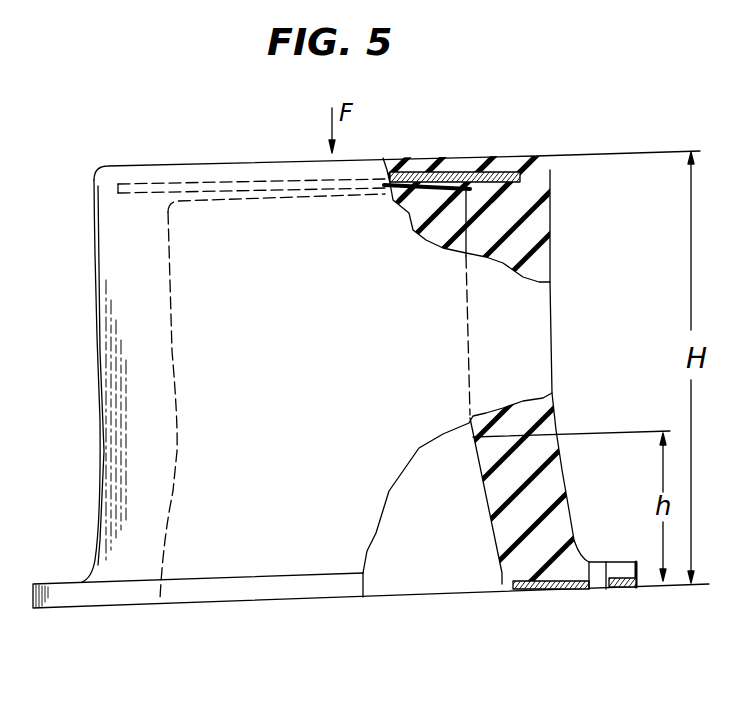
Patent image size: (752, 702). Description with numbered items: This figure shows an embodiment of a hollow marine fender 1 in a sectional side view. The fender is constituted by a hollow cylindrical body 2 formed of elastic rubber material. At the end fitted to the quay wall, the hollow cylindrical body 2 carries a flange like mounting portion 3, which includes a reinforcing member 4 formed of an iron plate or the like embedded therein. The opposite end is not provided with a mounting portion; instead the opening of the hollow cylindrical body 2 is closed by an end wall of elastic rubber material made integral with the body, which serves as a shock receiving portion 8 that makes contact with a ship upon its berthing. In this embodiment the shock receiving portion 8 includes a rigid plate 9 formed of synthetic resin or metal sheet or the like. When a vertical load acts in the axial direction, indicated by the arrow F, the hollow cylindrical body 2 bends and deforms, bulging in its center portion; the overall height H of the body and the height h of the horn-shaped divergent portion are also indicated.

The hollow marine fender 1 is at (94, 341).
The hollow cylindrical body 2 is at (543, 258).
The flange like mounting portion 3 is at (65, 599).
The reinforcing member 4 is at (548, 591).
The shock receiving portion 8 is at (457, 171).
The rigid plate 9 is at (500, 172).